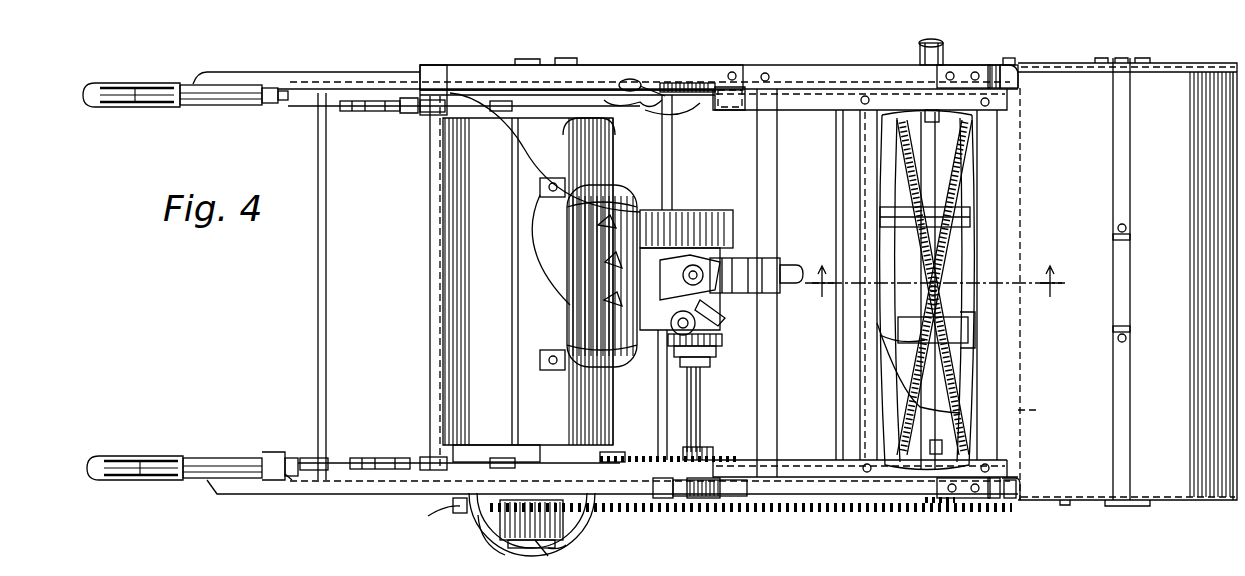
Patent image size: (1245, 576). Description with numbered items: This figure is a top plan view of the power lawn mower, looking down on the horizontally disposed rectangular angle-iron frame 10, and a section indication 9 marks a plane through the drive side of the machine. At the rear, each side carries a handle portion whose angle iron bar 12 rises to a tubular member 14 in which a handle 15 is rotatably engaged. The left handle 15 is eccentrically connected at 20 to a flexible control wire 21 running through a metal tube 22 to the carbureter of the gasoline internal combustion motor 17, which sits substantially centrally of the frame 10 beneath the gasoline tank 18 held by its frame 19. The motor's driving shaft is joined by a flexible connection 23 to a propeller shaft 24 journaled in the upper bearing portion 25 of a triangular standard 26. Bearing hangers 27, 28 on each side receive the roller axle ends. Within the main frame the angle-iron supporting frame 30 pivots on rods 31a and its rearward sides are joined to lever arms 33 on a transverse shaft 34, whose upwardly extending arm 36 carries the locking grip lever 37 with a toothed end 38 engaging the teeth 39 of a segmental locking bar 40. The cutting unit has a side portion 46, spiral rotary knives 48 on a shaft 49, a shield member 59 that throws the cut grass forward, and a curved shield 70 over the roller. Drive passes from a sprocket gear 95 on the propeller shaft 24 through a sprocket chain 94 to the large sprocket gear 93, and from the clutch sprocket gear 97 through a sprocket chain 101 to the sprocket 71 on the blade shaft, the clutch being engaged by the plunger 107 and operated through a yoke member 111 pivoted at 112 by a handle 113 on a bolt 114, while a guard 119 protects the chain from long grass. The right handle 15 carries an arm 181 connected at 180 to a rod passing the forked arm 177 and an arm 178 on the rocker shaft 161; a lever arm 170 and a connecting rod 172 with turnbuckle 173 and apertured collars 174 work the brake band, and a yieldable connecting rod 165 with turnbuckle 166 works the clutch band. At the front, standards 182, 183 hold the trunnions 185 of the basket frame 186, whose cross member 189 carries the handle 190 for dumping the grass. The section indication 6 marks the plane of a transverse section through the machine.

The drum 9 is at (546, 237).
The frame 10 is at (806, 67).
The angle iron bar 12 is at (379, 81).
The tubular member 14 is at (222, 100).
The handle 15 is at (150, 76).
The gasoline internal combustion motor 17 is at (712, 222).
The gasoline tank 18 is at (612, 282).
The frame 19 is at (624, 258).
The eccentric connection 20 is at (270, 106).
The flexible control wire 21 is at (287, 103).
The metal tube 22 is at (518, 128).
The flexible connection 23 is at (706, 362).
The propeller shaft 24 is at (702, 401).
The upper bearing portion 25 is at (705, 500).
The triangular standard 26 is at (665, 500).
The bearing hanger 27 is at (480, 522).
The bearing hanger 28 is at (487, 66).
The supporting frame 30 is at (820, 87).
The rod 31a is at (936, 105).
The lever arm 33 is at (695, 104).
The shaft 34 is at (672, 142).
The upwardly extending arm 36 is at (625, 101).
The locking grip lever 37 is at (636, 80).
The toothed end 38 is at (652, 86).
The teeth 39 is at (681, 83).
The segmental locking bar 40 is at (705, 82).
The side portion 46 is at (918, 65).
The rotary knives 48 is at (980, 366).
The shaft 49 is at (975, 345).
The shield member 59 is at (918, 377).
The curved shield 70 is at (838, 395).
The sprocket 71 is at (946, 508).
The large sprocket gear 93 is at (615, 452).
The sprocket chain 94 is at (641, 456).
The sprocket gear 95 is at (706, 452).
The sprocket gear 97 is at (495, 549).
The sprocket chain 101 is at (735, 513).
The plunger 107 is at (549, 556).
The yoke member 111 is at (566, 546).
The pivot 112 is at (594, 509).
The handle 113 is at (440, 515).
The bolt 114 is at (453, 504).
The guard 119 is at (575, 532).
The rocker shaft 161 is at (327, 267).
The yieldable connecting rod 165 is at (412, 458).
The turnbuckle 166 is at (383, 456).
The lever arm 170 is at (336, 102).
The connecting rod 172 is at (421, 110).
The turnbuckle 173 is at (356, 111).
The apertured collars 174 is at (430, 112).
The forked arm 177 is at (290, 481).
The arm 178 is at (327, 461).
The upper end 180 is at (296, 458).
The arm 181 is at (272, 452).
The standard 182 is at (995, 500).
The standard 183 is at (994, 68).
The trunnions 185 is at (1015, 68).
The basket frame 186 is at (1045, 412).
The cross member 189 is at (1134, 389).
The handle 190 is at (1124, 309).
The section line 6- 6 is at (933, 266).